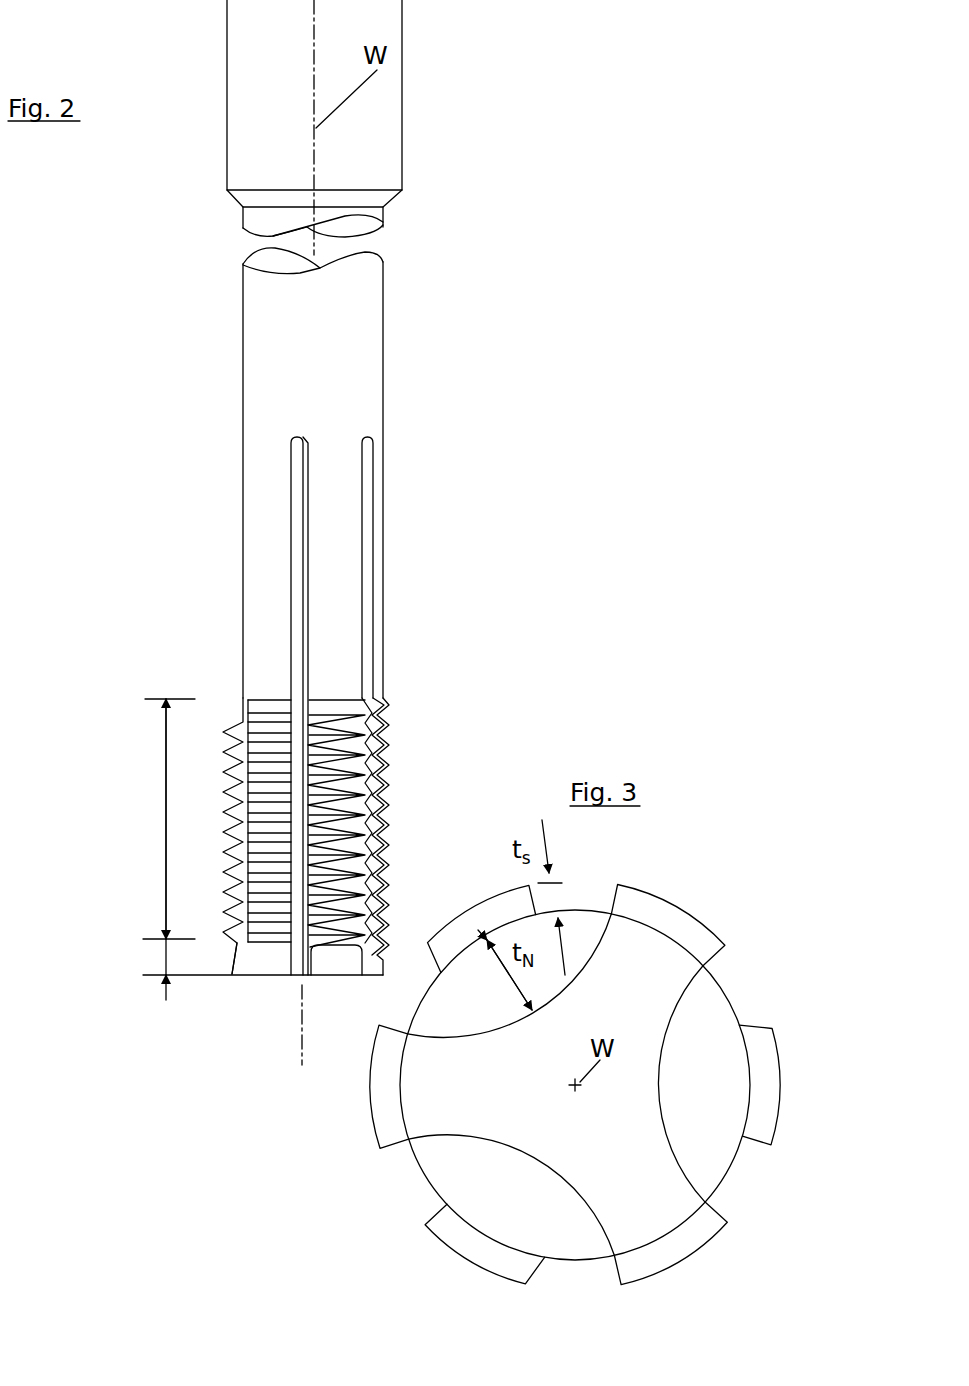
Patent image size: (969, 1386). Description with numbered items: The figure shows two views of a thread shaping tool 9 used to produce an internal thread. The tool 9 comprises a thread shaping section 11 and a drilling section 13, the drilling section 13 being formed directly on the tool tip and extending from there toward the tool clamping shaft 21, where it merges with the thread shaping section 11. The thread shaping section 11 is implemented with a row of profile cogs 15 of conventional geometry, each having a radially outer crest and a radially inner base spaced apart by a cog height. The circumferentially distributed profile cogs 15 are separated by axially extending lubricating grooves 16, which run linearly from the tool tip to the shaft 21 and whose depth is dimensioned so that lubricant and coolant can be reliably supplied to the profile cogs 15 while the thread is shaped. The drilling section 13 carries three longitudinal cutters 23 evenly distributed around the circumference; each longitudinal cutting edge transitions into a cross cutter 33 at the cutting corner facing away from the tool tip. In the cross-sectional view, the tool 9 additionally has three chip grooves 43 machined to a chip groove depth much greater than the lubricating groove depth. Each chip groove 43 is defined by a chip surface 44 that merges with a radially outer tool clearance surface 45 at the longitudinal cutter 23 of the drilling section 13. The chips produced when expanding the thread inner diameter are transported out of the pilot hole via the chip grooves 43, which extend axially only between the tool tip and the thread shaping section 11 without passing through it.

In FIG. 2, the thread shaping tool 9 is at (240, 365).
In FIG. 2, the thread shaping section 11 is at (163, 840).
In FIG. 2, the drilling section 13 is at (163, 950).
In FIG. 2, the profile cogs 15 is at (245, 744).
In FIG. 3, the profile cogs 15 is at (483, 917).
In FIG. 2, the lubricating grooves 16 is at (298, 520).
In FIG. 3, the lubricating grooves 16 is at (585, 905).
In FIG. 2, the tool clamping shaft 21 is at (403, 128).
In FIG. 2, the longitudinal cutters 23 is at (237, 944).
In FIG. 3, the longitudinal cutters 23 is at (698, 970).
In FIG. 2, the cross cutter 33 is at (236, 947).
In FIG. 3, the chip grooves 43 is at (474, 1027).
In FIG. 3, the chip surface 44 is at (525, 1157).
In FIG. 3, the tool clearance surface 45 is at (712, 953).